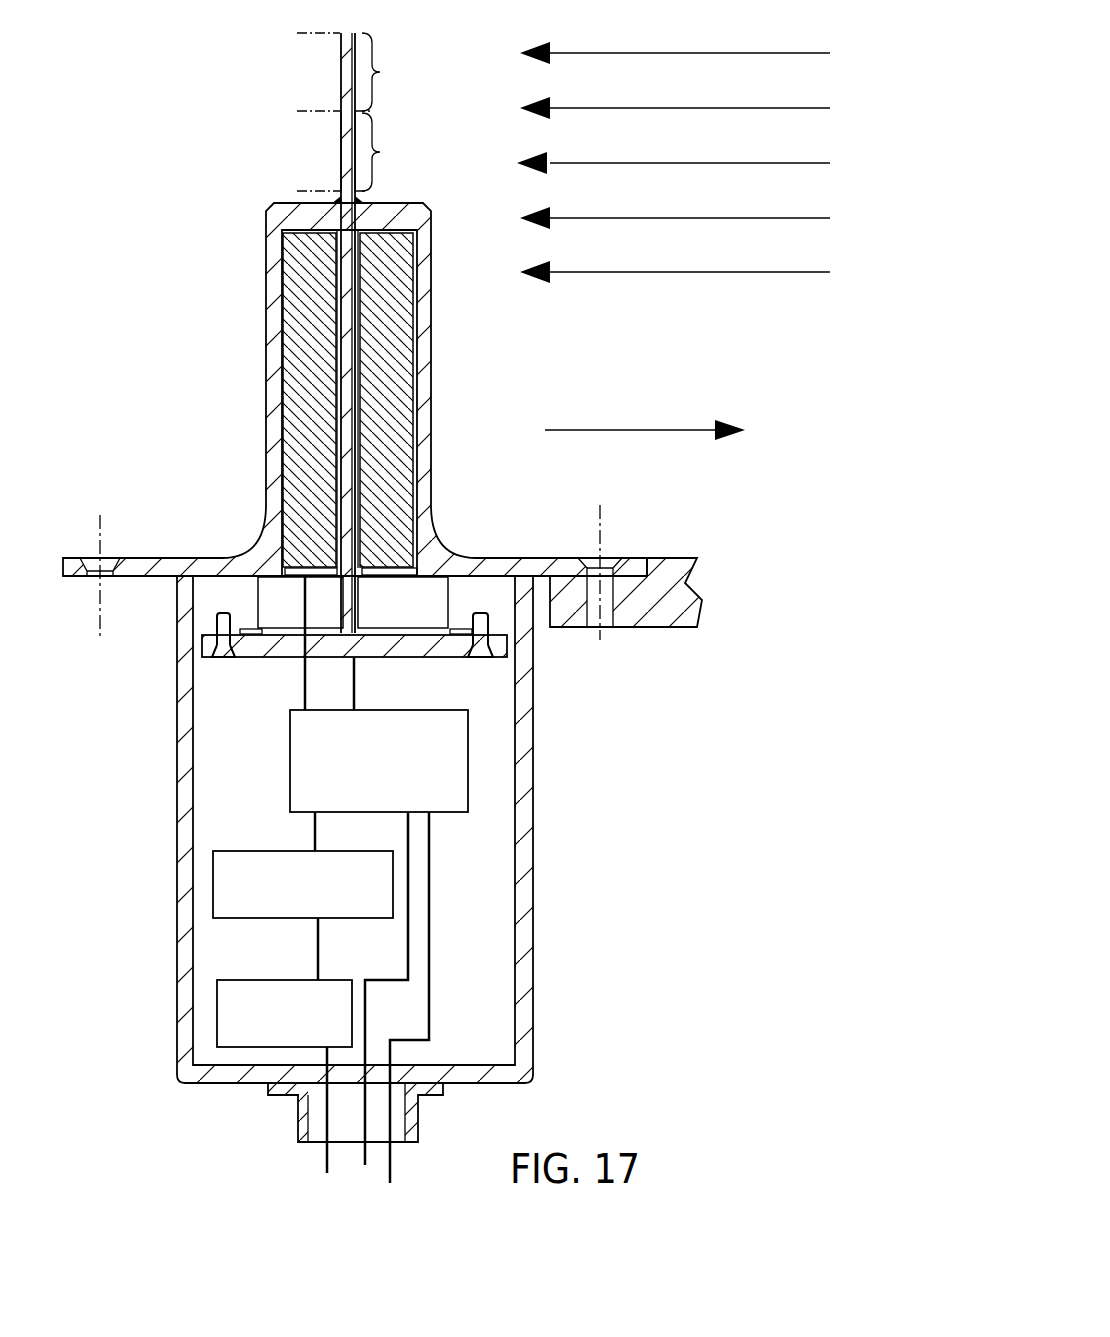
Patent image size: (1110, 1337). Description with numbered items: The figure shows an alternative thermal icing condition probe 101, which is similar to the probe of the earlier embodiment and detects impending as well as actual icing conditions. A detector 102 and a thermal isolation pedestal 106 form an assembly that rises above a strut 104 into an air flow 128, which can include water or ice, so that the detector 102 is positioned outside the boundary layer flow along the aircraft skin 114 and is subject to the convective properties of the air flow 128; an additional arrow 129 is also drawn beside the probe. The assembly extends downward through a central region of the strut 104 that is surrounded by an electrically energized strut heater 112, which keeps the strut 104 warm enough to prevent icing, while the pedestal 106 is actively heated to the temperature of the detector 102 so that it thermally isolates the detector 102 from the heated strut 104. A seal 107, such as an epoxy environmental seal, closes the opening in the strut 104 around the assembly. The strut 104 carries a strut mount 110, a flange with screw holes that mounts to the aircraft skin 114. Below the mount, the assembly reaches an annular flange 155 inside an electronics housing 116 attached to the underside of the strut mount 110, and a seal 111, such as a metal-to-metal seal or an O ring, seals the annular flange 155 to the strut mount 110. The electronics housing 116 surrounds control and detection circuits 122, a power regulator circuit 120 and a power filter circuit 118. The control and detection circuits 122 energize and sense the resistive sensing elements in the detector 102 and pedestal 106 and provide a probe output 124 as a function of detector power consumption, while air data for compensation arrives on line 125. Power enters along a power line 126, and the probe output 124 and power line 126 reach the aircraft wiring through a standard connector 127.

The thermal icing condition probe 101 is at (152, 115).
The detector 102 is at (382, 72).
The thermal isolation pedestal 106 is at (382, 152).
The seal 107 is at (341, 203).
The strut 104 is at (266, 314).
The strut heater 112 is at (283, 388).
The strut mount 110 is at (207, 558).
The aircraft skin 114 is at (676, 628).
The seal 111 is at (264, 658).
The annular flange 155 is at (403, 657).
The electronics housing 116 is at (532, 765).
The control and detection circuits 122 is at (290, 757).
The power regulator circuit 120 is at (213, 882).
The power filter circuit 118 is at (217, 1017).
The line 125 is at (408, 853).
The probe output 124 is at (429, 914).
The power line 126 is at (325, 1120).
The standard connector 127 is at (418, 1113).
The air flow 128 is at (657, 275).
The flow direction arrow 129 is at (660, 432).